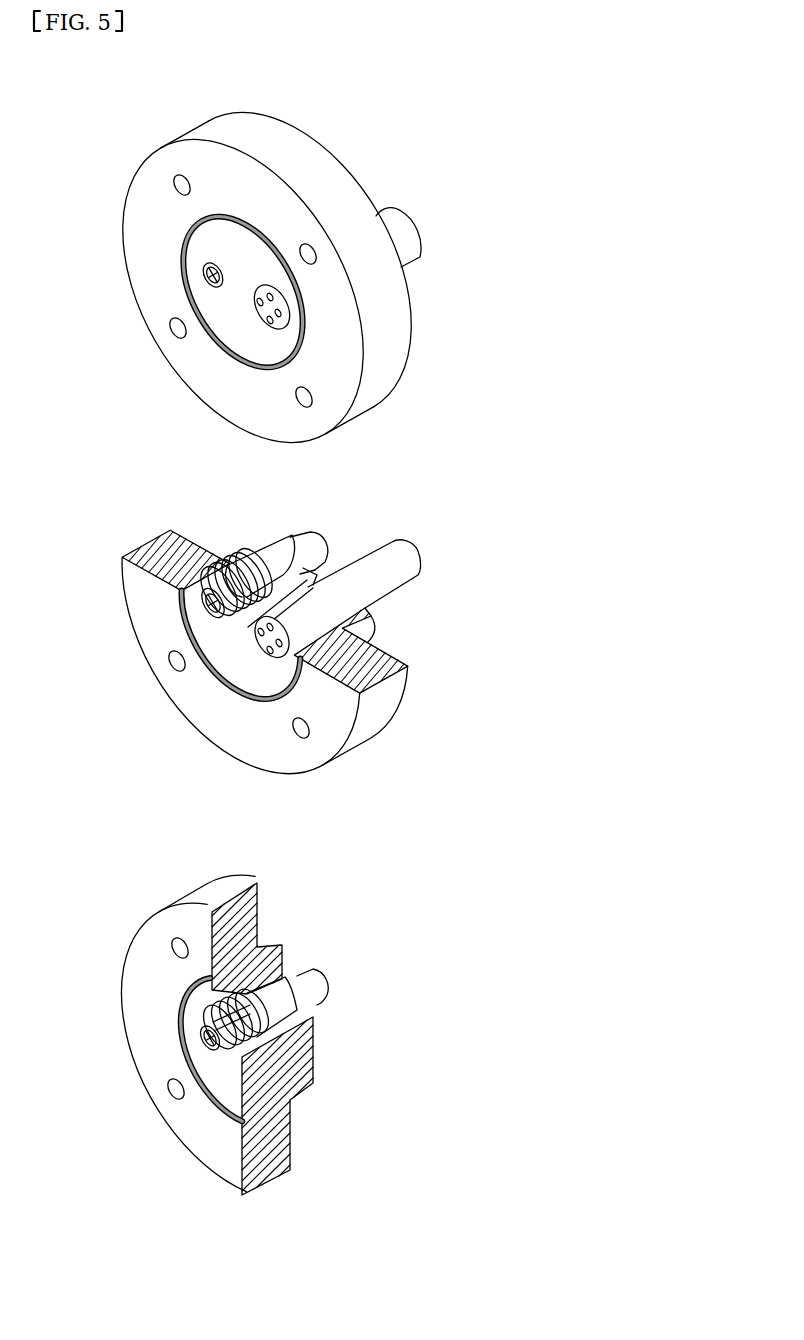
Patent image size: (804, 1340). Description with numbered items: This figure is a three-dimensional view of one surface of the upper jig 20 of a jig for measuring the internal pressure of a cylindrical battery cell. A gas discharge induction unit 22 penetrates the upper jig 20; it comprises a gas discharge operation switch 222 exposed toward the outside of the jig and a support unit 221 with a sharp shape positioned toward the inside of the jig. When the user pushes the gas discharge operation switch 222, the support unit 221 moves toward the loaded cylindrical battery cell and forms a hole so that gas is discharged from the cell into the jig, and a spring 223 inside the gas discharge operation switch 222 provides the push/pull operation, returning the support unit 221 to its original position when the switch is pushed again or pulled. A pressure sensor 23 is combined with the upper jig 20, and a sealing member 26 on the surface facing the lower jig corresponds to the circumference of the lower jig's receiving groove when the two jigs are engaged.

The upper jig 20 is at (333, 388).
The gas discharge induction unit 22 is at (298, 565).
The pressure sensor 23 is at (400, 233).
The sealing member 26 is at (237, 357).
The support unit 221 is at (213, 273).
The gas discharge operation switch 222 is at (312, 552).
The spring 223 is at (230, 567).